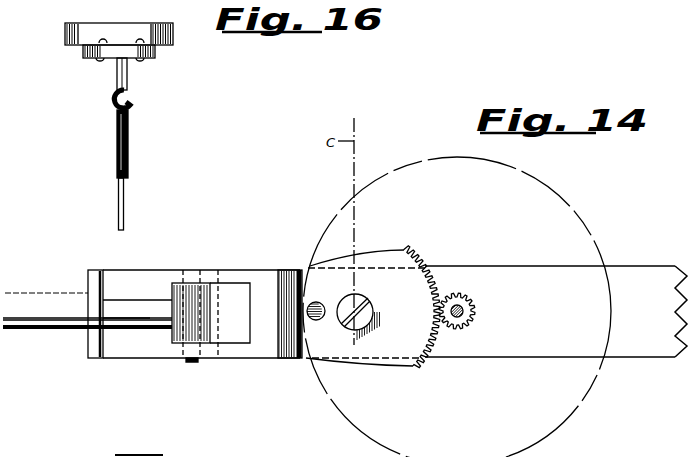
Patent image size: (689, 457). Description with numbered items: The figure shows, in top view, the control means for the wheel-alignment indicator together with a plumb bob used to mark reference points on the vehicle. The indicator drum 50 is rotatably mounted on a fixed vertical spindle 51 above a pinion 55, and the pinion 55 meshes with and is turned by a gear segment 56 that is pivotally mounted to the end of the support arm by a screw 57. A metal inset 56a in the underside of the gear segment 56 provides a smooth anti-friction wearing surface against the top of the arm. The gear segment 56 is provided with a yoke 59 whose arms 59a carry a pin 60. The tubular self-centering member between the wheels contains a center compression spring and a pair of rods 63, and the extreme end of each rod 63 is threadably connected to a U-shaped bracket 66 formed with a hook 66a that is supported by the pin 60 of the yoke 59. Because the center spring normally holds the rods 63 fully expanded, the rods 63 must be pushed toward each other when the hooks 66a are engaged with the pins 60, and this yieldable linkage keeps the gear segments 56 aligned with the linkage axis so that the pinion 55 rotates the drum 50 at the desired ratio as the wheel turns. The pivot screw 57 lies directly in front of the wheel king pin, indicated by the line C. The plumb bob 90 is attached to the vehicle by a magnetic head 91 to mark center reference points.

In FIG. 16, the plumb bob 90 is at (124, 190).
In FIG. 16, the magnetic head 91 is at (174, 33).
In FIG. 14, the drum 50 is at (573, 218).
In FIG. 14, the fixed vertical spindle 51 is at (462, 306).
In FIG. 14, the pinion 55 is at (470, 316).
In FIG. 14, the gear segment 56 is at (418, 360).
In FIG. 14, the metal inset 56a is at (317, 302).
In FIG. 14, the screw 57 is at (363, 308).
In FIG. 14, the yoke 59 is at (268, 278).
In FIG. 14, the yoke arm 59a is at (232, 286).
In FIG. 14, the pin 60 is at (192, 360).
In FIG. 14, the rod 63 is at (28, 298).
In FIG. 14, the U-shaped bracket 66 is at (97, 281).
In FIG. 14, the hook 66a is at (200, 283).